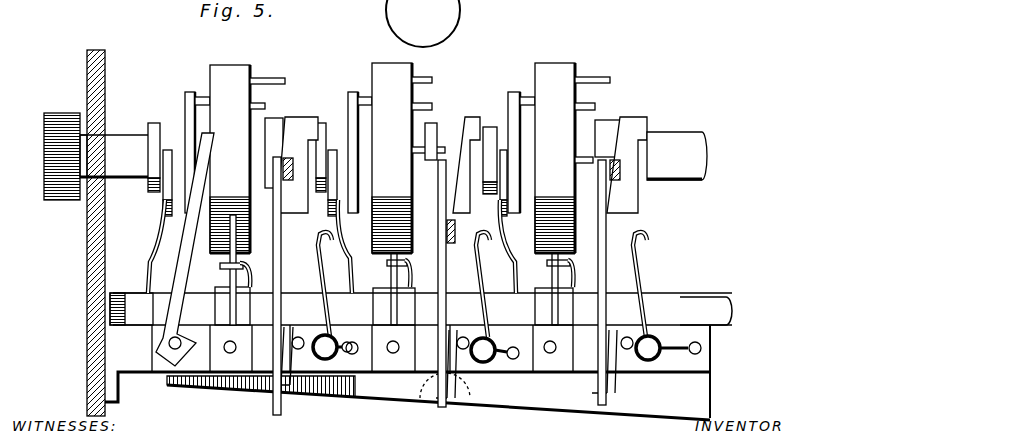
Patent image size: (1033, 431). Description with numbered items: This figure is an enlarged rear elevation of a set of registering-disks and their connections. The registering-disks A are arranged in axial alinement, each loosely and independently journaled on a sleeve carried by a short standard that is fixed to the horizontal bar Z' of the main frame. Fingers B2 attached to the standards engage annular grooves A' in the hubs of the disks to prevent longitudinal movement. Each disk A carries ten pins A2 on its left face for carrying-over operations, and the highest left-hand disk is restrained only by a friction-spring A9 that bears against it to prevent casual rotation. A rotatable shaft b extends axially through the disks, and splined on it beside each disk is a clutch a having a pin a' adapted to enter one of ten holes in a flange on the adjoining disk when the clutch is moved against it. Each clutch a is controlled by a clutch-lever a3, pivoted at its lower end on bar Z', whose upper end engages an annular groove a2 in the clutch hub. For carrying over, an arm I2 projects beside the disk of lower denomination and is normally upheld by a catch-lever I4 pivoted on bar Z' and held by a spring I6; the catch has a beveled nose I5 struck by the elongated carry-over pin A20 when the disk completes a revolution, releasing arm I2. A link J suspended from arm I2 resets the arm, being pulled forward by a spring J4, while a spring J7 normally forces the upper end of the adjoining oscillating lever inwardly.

The rotatable shaft b is at (127, 145).
The clutch a is at (339, 147).
The clutch pin a' is at (356, 76).
The annular groove a2 is at (316, 122).
The clutch-lever a3 is at (340, 252).
The registering-disk A is at (392, 149).
The annular groove A' is at (244, 269).
The pins A2 is at (430, 80).
The friction-spring A9 is at (183, 248).
The carry-over pin A20 is at (266, 78).
The fingers B2 is at (277, 118).
The carry-over arm I2 is at (627, 172).
The catch-lever I4 is at (628, 120).
The beveled nose I5 is at (605, 170).
The spring I6 is at (648, 268).
The link J is at (425, 388).
The spring J4 is at (392, 268).
The spring J7 is at (475, 397).
The horizontal bar Z' is at (734, 352).